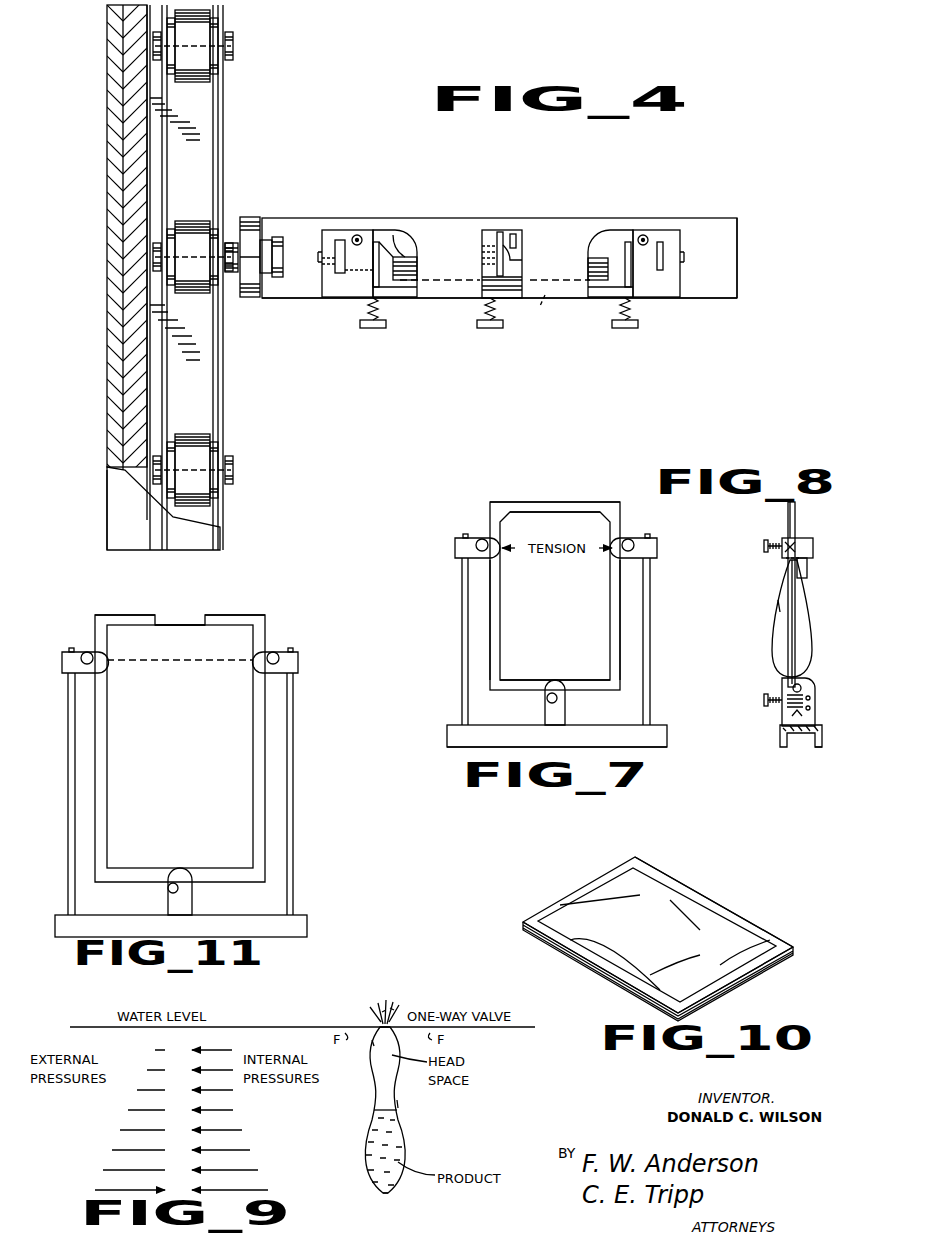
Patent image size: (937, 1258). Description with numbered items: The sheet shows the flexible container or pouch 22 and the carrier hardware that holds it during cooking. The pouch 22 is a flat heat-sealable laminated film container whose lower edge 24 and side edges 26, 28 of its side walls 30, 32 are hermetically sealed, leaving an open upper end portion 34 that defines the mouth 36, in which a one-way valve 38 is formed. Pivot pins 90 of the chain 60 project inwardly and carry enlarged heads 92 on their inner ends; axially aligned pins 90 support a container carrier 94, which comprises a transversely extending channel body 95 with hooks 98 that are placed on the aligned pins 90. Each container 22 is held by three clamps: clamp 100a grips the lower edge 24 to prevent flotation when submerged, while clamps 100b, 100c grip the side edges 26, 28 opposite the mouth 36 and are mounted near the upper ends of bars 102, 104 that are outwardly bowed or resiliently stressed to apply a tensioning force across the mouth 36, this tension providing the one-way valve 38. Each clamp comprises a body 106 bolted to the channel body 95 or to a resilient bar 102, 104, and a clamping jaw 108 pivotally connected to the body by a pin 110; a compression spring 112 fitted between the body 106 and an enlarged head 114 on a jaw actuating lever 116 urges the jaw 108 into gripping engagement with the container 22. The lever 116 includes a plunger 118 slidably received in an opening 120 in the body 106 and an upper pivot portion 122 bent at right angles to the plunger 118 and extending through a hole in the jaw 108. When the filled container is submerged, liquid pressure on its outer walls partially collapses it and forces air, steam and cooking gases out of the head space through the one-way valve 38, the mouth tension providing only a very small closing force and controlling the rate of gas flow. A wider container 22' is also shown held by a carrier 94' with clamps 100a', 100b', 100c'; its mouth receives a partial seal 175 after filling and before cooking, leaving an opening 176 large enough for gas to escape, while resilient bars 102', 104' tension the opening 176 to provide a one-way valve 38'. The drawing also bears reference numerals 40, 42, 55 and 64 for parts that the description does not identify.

In FIG. 4, the flexible container 22 is at (495, 307).
In FIG. 7, the flexible container 22 is at (519, 602).
In FIG. 8, the flexible container 22 is at (764, 618).
In FIG. 10, the flexible container 22 is at (658, 919).
In FIG. 9, the flexible container 22 is at (354, 1110).
In FIG. 7, the lower edge 24 is at (525, 692).
In FIG. 8, the lower edge 24 is at (805, 685).
In FIG. 10, the lower edge 24 is at (735, 985).
In FIG. 9, the lower edge 24 is at (390, 1192).
In FIG. 7, the side edge 26 is at (490, 630).
In FIG. 10, the side edge 26 is at (560, 940).
In FIG. 7, the side edge 28 is at (620, 632).
In FIG. 8, the side edge 28 is at (788, 620).
In FIG. 10, the side edge 28 is at (762, 935).
In FIG. 7, the side wall 30 is at (530, 597).
In FIG. 8, the side wall 30 is at (778, 606).
In FIG. 10, the side wall 30 is at (680, 900).
In FIG. 9, the side wall 30 is at (374, 1110).
In FIG. 8, the side wall 32 is at (805, 615).
In FIG. 9, the side wall 32 is at (397, 1113).
In FIG. 7, the open upper end portion 34 is at (505, 503).
In FIG. 8, the open upper end portion 34 is at (788, 512).
In FIG. 9, the open upper end portion 34 is at (410, 1026).
In FIG. 7, the mouth 36 is at (568, 525).
In FIG. 9, the mouth 36 is at (383, 1003).
In FIG. 8, the one-way valve 38 is at (767, 555).
In FIG. 9, the one-way valve 38 is at (358, 1051).
In FIG. 4, the wall of tank 40 is at (107, 93).
In FIG. 4, the lining 42 is at (110, 137).
In FIG. 4, the carrier assembly 55 is at (228, 152).
In FIG. 4, the chain 60 is at (223, 113).
In FIG. 4, the base support 64 is at (140, 522).
In FIG. 4, the pivot pin 90 is at (232, 243).
In FIG. 4, the enlarged head 92 is at (282, 277).
In FIG. 4, the hook 98 is at (248, 297).
In FIG. 4, the container carrier 94 is at (539, 248).
In FIG. 7, the container carrier 94 is at (530, 743).
In FIG. 8, the container carrier 94 is at (774, 730).
In FIG. 4, the channel body 95 is at (738, 246).
In FIG. 7, the channel body 95 is at (660, 742).
In FIG. 8, the channel body 95 is at (808, 746).
In FIG. 4, the clamp 100a is at (489, 245).
In FIG. 7, the clamp 100a is at (584, 702).
In FIG. 8, the clamp 100a is at (766, 702).
In FIG. 4, the clamp 100b is at (379, 240).
In FIG. 7, the clamp 100b is at (447, 546).
In FIG. 4, the clamp 100c is at (653, 245).
In FIG. 7, the clamp 100c is at (642, 536).
In FIG. 8, the clamp 100c is at (768, 538).
In FIG. 4, the bar 102 is at (328, 259).
In FIG. 7, the bar 102 is at (440, 641).
In FIG. 4, the bar 104 is at (680, 263).
In FIG. 7, the bar 104 is at (666, 641).
In FIG. 8, the bar 104 is at (813, 593).
In FIG. 4, the body 106 is at (333, 298).
In FIG. 4, the clamping jaw 108 is at (482, 265).
In FIG. 4, the pin 110 is at (352, 236).
In FIG. 4, the compression spring 112 is at (378, 312).
In FIG. 4, the enlarged head 114 is at (380, 328).
In FIG. 4, the jaw actuating lever 116 is at (345, 270).
In FIG. 4, the plunger 118 is at (480, 252).
In FIG. 4, the opening 120 is at (380, 292).
In FIG. 4, the upper pivot portion 122 is at (390, 245).
In FIG. 11, the partial seal 175 is at (130, 615).
In FIG. 11, the opening 176 is at (178, 620).
In FIG. 11, the wide container 22' is at (213, 748).
In FIG. 11, the one-way valve 38' is at (180, 680).
In FIG. 11, the carrier 94' is at (203, 911).
In FIG. 11, the clamp 100a' is at (137, 891).
In FIG. 11, the clamp 100b' is at (68, 646).
In FIG. 11, the clamp 100c' is at (295, 645).
In FIG. 11, the resilient bar 102' is at (100, 794).
In FIG. 11, the resilient bar 104' is at (244, 794).